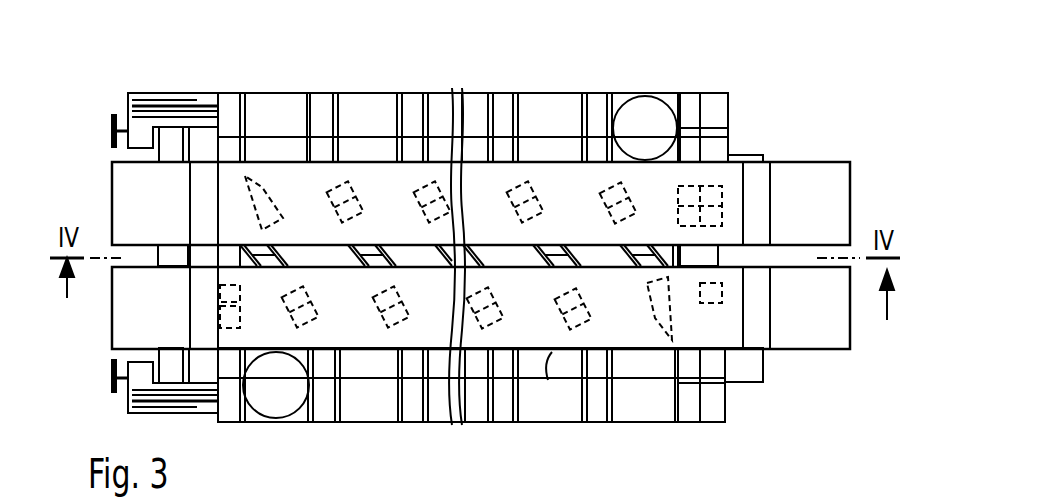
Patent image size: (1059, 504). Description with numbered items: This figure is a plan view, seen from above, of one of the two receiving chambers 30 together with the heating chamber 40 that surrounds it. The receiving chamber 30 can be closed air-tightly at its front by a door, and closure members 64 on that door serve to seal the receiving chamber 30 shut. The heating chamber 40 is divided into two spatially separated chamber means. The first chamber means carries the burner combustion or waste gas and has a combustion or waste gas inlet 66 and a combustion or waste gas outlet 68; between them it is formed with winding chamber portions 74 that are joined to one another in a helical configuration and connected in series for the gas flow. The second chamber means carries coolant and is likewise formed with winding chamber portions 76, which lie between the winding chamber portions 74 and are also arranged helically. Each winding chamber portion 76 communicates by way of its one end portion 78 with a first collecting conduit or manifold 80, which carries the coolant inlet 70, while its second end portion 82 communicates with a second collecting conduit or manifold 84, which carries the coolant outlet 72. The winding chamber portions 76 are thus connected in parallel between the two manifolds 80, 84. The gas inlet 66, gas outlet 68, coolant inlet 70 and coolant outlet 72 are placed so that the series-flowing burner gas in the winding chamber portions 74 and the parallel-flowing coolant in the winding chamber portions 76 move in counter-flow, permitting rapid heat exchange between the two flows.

The receiving chamber 30 is at (287, 180).
The heating chamber 40 is at (255, 110).
The closure members 64 is at (117, 118).
The combustion or waste gas inlet 66 is at (285, 398).
The combustion or waste gas outlet 68 is at (637, 120).
The coolant inlet 70 is at (813, 352).
The coolant outlet 72 is at (118, 197).
The winding chamber portions 74 is at (279, 100).
The winding chamber portions 76 is at (334, 100).
The one end portion 78 is at (290, 318).
The first collecting conduit or manifold 80 is at (548, 380).
The second end portion 82 is at (262, 212).
The second collecting conduit or manifold 84 is at (716, 195).